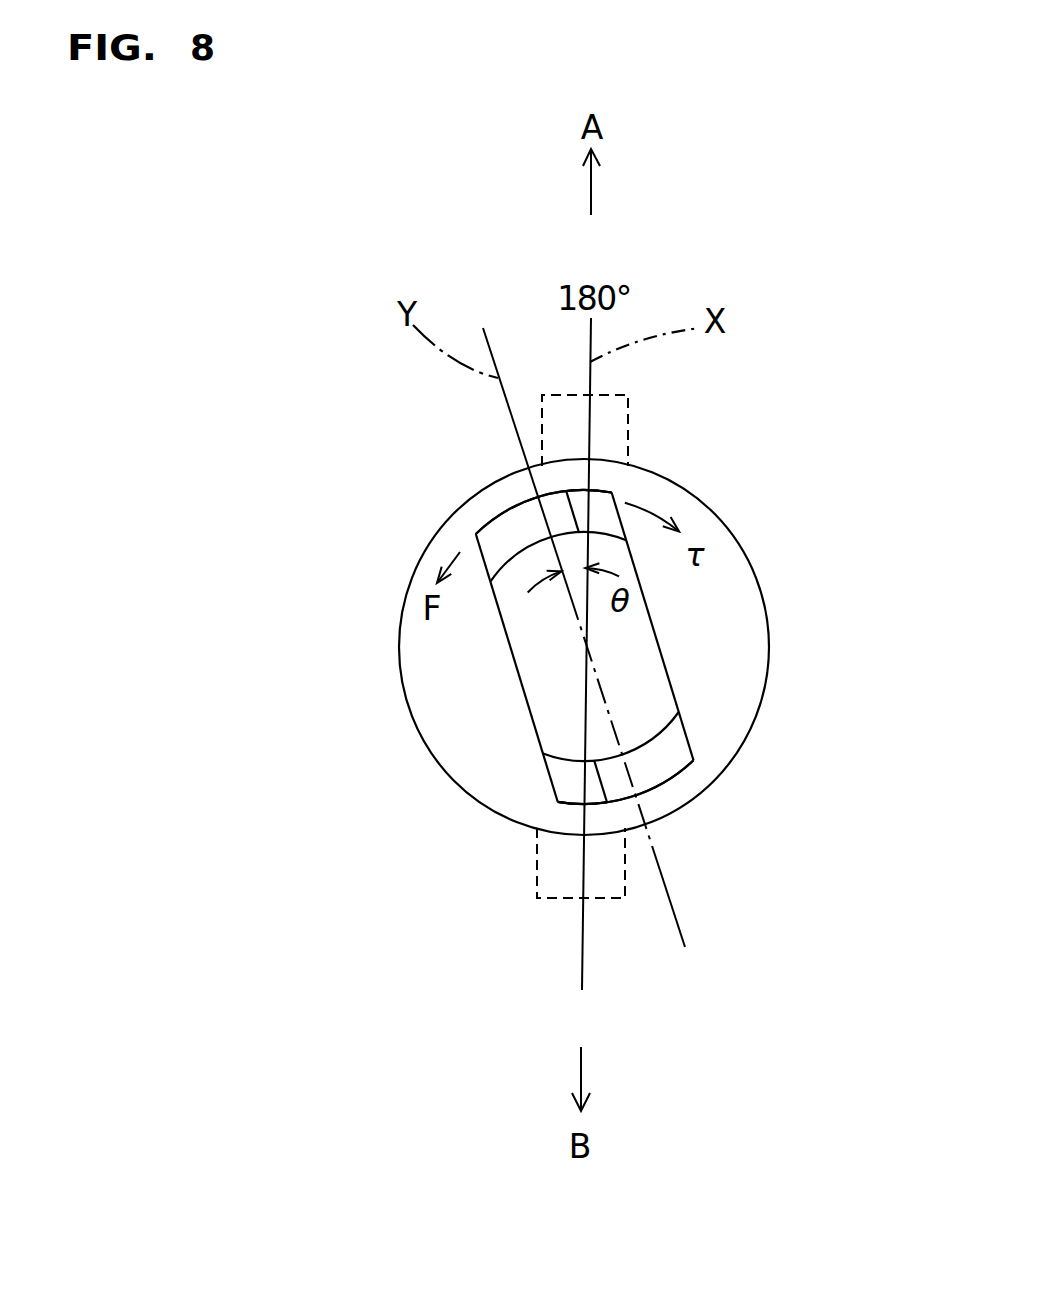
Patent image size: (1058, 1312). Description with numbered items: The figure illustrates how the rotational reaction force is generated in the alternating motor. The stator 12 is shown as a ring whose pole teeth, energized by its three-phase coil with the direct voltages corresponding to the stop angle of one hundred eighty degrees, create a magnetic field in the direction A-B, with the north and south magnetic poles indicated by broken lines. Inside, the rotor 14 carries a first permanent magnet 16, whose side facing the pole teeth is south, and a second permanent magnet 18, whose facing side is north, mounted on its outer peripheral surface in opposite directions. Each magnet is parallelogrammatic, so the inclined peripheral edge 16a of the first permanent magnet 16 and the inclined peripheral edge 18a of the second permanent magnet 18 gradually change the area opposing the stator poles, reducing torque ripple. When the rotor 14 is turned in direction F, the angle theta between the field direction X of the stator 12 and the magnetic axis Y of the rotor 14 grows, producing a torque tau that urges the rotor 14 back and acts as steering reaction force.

The stator 12 is at (757, 575).
The rotor 14 is at (641, 656).
The first permanent magnet 16 is at (502, 533).
The inclined peripheral edge 16a is at (608, 498).
The second permanent magnet 18 is at (670, 757).
The inclined peripheral edge 18a is at (565, 782).